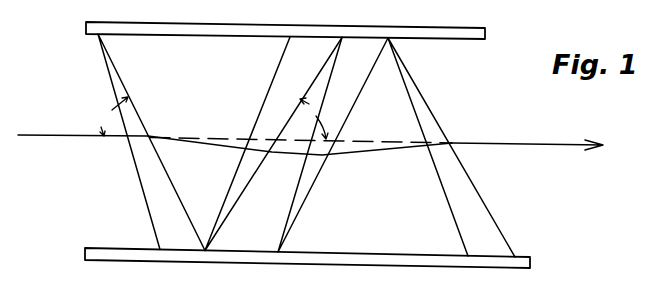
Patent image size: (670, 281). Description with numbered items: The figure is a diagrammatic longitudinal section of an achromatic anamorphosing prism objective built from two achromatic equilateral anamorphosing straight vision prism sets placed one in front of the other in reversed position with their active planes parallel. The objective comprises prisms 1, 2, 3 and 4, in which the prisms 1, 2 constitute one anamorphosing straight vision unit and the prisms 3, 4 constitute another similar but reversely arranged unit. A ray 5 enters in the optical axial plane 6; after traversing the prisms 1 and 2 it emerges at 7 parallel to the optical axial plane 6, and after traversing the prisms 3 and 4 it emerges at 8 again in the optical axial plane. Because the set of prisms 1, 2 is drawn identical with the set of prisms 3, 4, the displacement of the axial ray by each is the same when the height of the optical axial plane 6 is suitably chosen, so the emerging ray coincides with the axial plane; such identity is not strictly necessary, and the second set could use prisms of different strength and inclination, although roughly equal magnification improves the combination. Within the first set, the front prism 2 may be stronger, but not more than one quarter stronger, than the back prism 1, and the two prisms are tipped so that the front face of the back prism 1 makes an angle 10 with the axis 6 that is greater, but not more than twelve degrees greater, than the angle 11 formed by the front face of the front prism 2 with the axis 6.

The back prism 1 is at (151, 142).
The front prism 2 is at (273, 144).
The prism 3 is at (333, 145).
The prism 4 is at (451, 147).
The ray 5 is at (42, 135).
The optical axial plane 6 is at (220, 137).
The emerging ray position after first prism set 7 is at (285, 153).
The emerging ray position after second prism set 8 is at (536, 143).
The angle of front face of back prism 10 is at (112, 116).
The angle of front face of front prism 11 is at (314, 118).